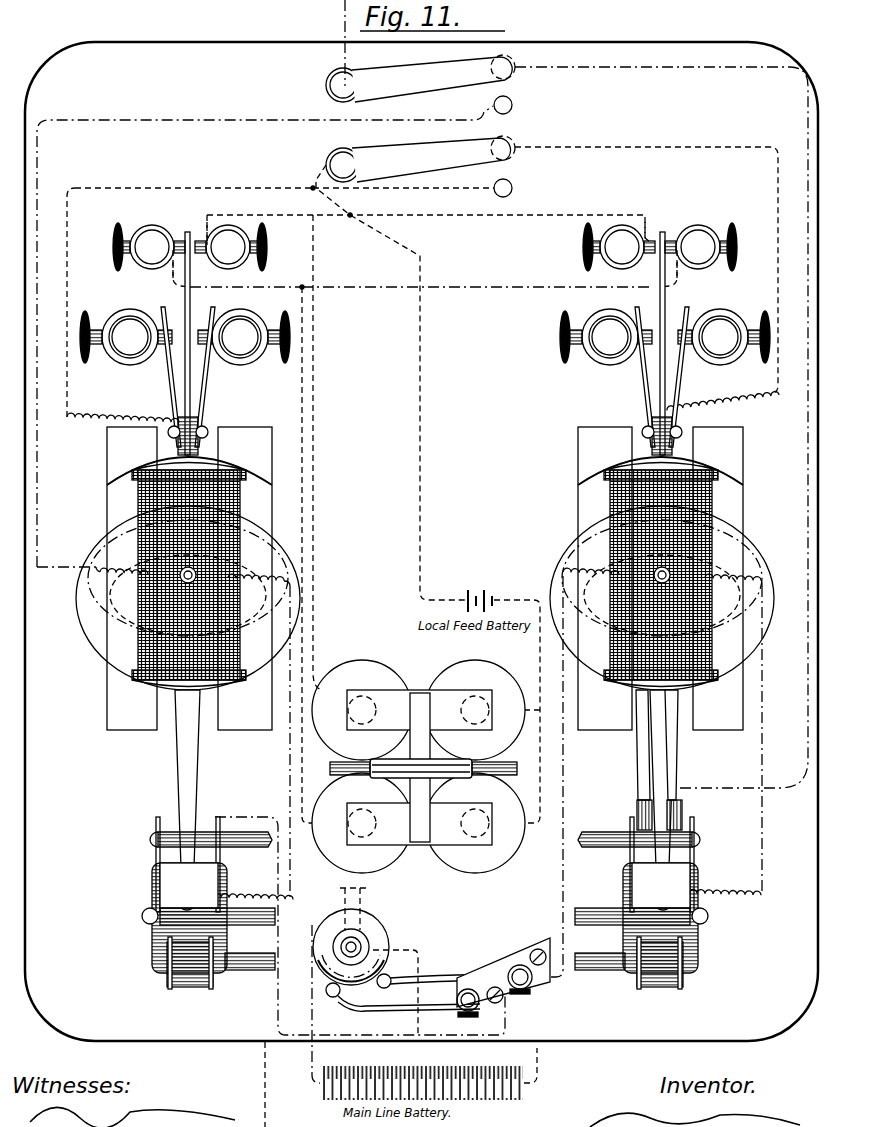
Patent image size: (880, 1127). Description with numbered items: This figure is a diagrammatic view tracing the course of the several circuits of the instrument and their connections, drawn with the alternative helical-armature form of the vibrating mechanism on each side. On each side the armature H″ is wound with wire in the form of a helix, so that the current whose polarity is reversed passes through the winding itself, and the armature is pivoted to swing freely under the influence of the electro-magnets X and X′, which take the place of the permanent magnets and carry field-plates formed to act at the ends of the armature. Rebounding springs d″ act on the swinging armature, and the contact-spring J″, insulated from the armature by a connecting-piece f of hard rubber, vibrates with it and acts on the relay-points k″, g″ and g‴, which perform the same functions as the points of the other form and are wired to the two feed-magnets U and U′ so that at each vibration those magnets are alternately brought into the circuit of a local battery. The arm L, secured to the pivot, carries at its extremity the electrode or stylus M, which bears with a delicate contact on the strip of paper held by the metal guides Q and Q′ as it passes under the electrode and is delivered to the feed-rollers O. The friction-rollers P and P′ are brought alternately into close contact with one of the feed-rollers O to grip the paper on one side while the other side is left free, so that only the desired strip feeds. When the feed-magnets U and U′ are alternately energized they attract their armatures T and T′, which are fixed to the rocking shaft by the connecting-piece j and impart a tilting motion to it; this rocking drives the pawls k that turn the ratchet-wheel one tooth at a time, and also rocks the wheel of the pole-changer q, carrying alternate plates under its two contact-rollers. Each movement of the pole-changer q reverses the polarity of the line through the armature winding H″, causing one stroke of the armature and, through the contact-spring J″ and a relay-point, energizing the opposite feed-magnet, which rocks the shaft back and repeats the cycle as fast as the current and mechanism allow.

The relay-points k'' is at (425, 247).
The relay-point g''' is at (436, 227).
The relay-points g'' is at (413, 271).
The contact-spring J'' is at (433, 343).
The rebounding springs d'' is at (425, 377).
The connecting-piece f is at (374, 434).
The armature H'' is at (425, 578).
The electro-magnet X is at (419, 598).
The electro-magnets X' is at (507, 553).
The arm L is at (174, 762).
The pawls k is at (649, 760).
The guide Q' is at (211, 864).
The guide Q is at (639, 864).
The electrode M is at (461, 897).
The feed-roller O is at (152, 940).
The friction-roller P' is at (190, 972).
The friction-roller P is at (660, 972).
The feed-magnet U is at (418, 710).
The feed-magnet U' is at (418, 823).
The armature T is at (419, 710).
The armature T' is at (419, 824).
The connecting-piece j is at (423, 767).
The pole-changer q is at (431, 952).